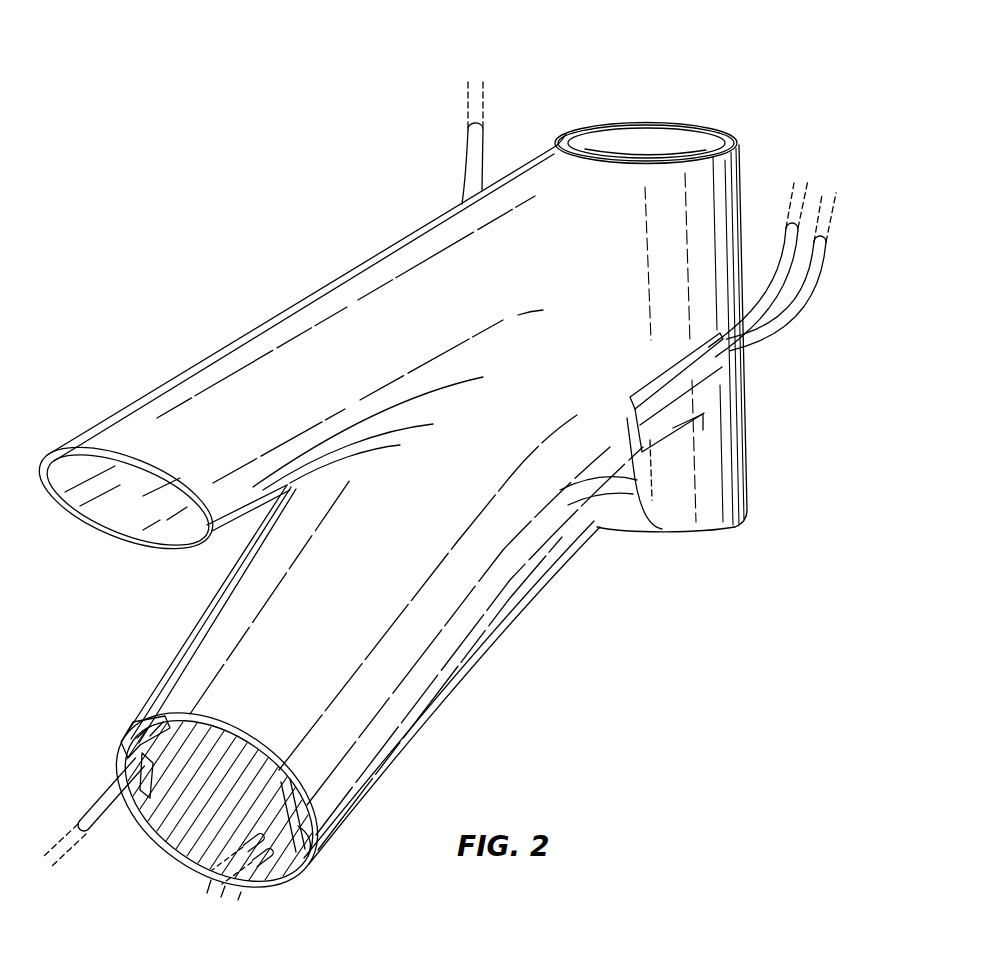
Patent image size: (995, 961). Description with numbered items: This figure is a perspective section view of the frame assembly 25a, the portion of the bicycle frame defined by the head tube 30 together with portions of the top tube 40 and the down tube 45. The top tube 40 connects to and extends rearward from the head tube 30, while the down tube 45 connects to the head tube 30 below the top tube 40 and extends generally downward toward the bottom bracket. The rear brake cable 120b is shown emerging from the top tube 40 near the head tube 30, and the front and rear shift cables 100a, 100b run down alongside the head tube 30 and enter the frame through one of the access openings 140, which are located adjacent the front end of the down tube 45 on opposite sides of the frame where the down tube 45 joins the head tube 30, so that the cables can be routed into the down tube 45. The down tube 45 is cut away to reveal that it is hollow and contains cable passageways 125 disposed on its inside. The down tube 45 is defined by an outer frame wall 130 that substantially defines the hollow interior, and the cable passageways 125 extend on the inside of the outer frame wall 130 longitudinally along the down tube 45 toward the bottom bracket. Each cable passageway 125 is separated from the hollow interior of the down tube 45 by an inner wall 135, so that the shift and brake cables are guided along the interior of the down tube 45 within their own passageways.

The frame assembly 25a is at (289, 85).
The head tube 30 is at (722, 182).
The top tube 40 is at (199, 396).
The down tube 45 is at (419, 702).
The front shift cable 100a is at (776, 290).
The rear shift cable 100b is at (777, 333).
The rear brake cable 120b is at (468, 158).
The cable passageways 125 is at (118, 770).
The outer frame wall 130 is at (120, 737).
The inner wall 135 is at (155, 766).
The access openings 140 is at (674, 428).